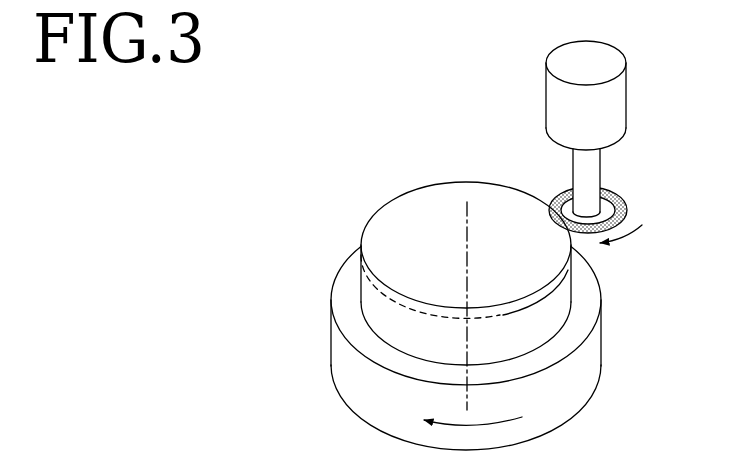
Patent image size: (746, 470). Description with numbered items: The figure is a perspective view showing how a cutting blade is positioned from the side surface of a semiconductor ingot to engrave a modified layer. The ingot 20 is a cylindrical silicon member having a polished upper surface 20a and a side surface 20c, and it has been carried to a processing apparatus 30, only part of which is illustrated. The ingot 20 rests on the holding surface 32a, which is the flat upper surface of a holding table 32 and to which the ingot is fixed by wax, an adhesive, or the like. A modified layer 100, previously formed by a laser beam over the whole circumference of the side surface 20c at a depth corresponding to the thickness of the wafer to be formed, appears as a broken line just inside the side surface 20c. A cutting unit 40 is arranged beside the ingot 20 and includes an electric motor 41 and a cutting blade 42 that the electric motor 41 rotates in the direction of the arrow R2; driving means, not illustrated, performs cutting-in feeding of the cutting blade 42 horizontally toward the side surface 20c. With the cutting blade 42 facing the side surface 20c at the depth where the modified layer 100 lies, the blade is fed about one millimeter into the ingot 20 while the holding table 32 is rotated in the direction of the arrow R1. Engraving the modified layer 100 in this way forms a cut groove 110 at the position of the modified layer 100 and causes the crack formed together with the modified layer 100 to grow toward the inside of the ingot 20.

The semiconductor ingot 20 is at (493, 248).
The upper surface 20a is at (400, 217).
The side surface 20c is at (544, 325).
The modified layer 100 is at (448, 318).
The cut groove 110 is at (547, 296).
The processing apparatus 30 is at (426, 297).
The holding table 32 is at (426, 349).
The holding surface 32a is at (348, 297).
The cutting unit 40 is at (625, 137).
The electric motor 41 is at (617, 108).
The cutting blade 42 is at (620, 193).
The arrow R1 is at (482, 420).
The arrow R2 is at (627, 238).